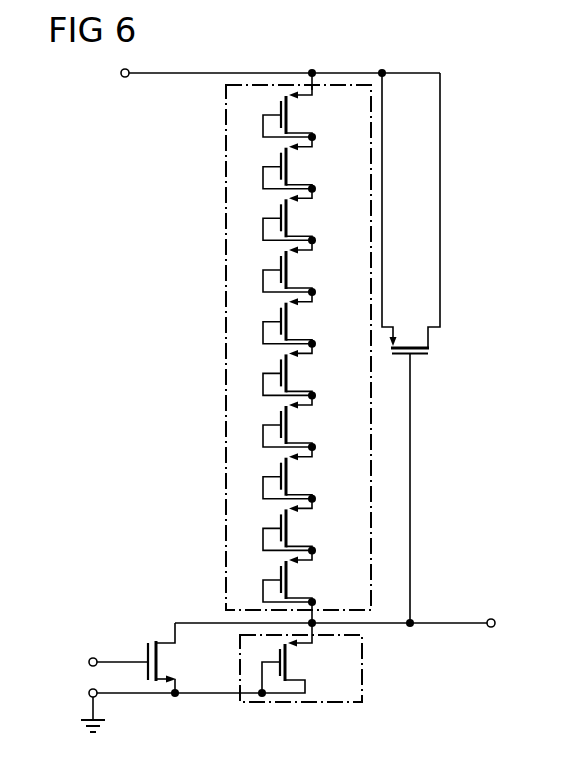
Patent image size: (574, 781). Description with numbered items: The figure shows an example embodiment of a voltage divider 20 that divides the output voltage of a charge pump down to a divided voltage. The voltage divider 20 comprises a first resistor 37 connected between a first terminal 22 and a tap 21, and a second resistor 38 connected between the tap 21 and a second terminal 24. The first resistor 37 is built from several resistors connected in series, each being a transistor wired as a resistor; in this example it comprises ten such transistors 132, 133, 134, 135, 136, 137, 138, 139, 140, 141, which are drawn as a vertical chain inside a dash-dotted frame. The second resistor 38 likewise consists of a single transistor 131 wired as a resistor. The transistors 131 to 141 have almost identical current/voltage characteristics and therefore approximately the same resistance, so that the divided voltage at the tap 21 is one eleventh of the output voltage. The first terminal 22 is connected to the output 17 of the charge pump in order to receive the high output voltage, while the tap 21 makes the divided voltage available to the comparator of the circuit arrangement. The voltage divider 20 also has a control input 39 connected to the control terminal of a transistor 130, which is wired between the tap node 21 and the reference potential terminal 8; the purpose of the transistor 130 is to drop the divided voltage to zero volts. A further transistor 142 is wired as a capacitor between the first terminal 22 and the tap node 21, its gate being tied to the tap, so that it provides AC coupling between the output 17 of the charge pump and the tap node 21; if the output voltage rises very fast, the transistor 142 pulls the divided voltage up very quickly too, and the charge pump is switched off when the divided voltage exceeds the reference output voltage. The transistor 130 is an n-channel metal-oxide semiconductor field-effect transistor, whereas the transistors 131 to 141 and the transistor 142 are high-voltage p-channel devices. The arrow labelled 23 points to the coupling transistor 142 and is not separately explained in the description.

The reference potential terminal 8 is at (106, 720).
The output of the charge pump 17 is at (119, 96).
The voltage divider 20 is at (152, 252).
The tap 21 is at (491, 619).
The first terminal 22 is at (312, 68).
The output transistor path 23 is at (431, 363).
The second terminal 24 is at (199, 696).
The first resistor 37 is at (226, 388).
The second resistor 38 is at (362, 650).
The control input 39 is at (93, 658).
The transistor 130 is at (160, 661).
The transistor 131 is at (290, 660).
The transistor 132 is at (291, 572).
The transistor 133 is at (291, 520).
The transistor 134 is at (291, 469).
The transistor 135 is at (291, 417).
The transistor 136 is at (291, 365).
The transistor 137 is at (291, 314).
The transistor 138 is at (291, 262).
The transistor 139 is at (291, 210).
The transistor 140 is at (291, 159).
The transistor 141 is at (291, 107).
The transistor 142 is at (398, 342).